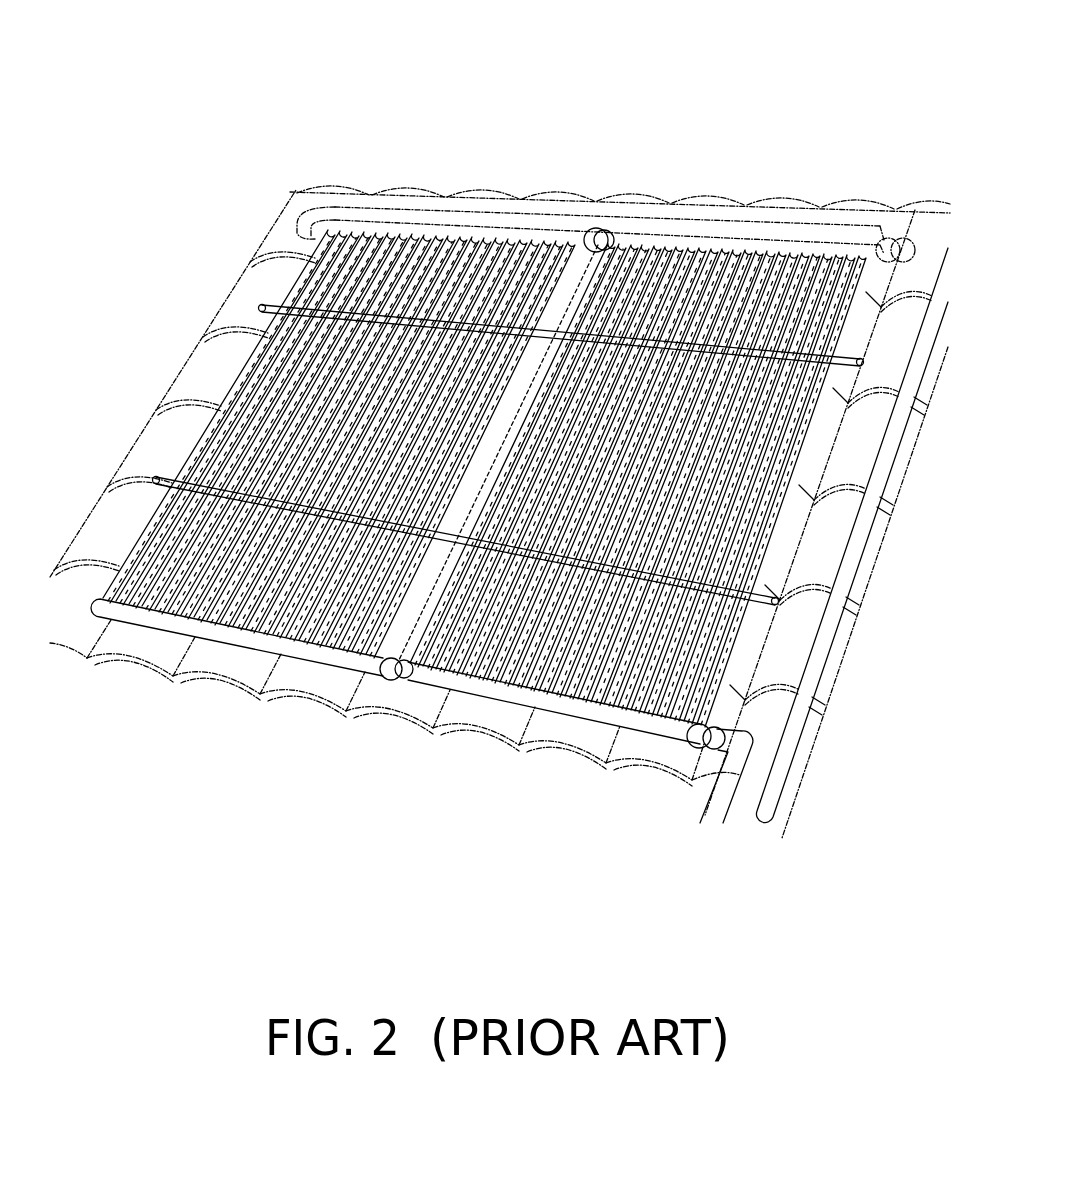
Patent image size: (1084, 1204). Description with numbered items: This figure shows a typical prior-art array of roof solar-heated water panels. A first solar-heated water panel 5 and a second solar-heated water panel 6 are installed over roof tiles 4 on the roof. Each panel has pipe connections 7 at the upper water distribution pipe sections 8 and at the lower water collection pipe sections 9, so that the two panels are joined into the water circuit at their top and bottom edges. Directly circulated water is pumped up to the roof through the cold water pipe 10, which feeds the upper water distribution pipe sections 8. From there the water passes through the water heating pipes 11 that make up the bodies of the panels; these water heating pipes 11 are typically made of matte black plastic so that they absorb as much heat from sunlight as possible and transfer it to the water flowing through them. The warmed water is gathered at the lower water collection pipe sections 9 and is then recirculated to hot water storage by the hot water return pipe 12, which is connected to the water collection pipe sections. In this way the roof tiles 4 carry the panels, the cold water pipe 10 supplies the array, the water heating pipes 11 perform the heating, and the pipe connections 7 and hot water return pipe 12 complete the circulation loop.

The roof tiles 4 is at (108, 642).
The first solar-heated water panel 5 is at (487, 260).
The second solar-heated water panel 6 is at (722, 318).
The pipe connections 7 is at (595, 230).
The upper water distribution pipe sections 8 is at (853, 245).
The lower water collection pipe sections 9 is at (552, 703).
The cold water pipe 10 is at (398, 203).
The water heating pipes 11 is at (362, 410).
The hot water return pipe 12 is at (710, 805).